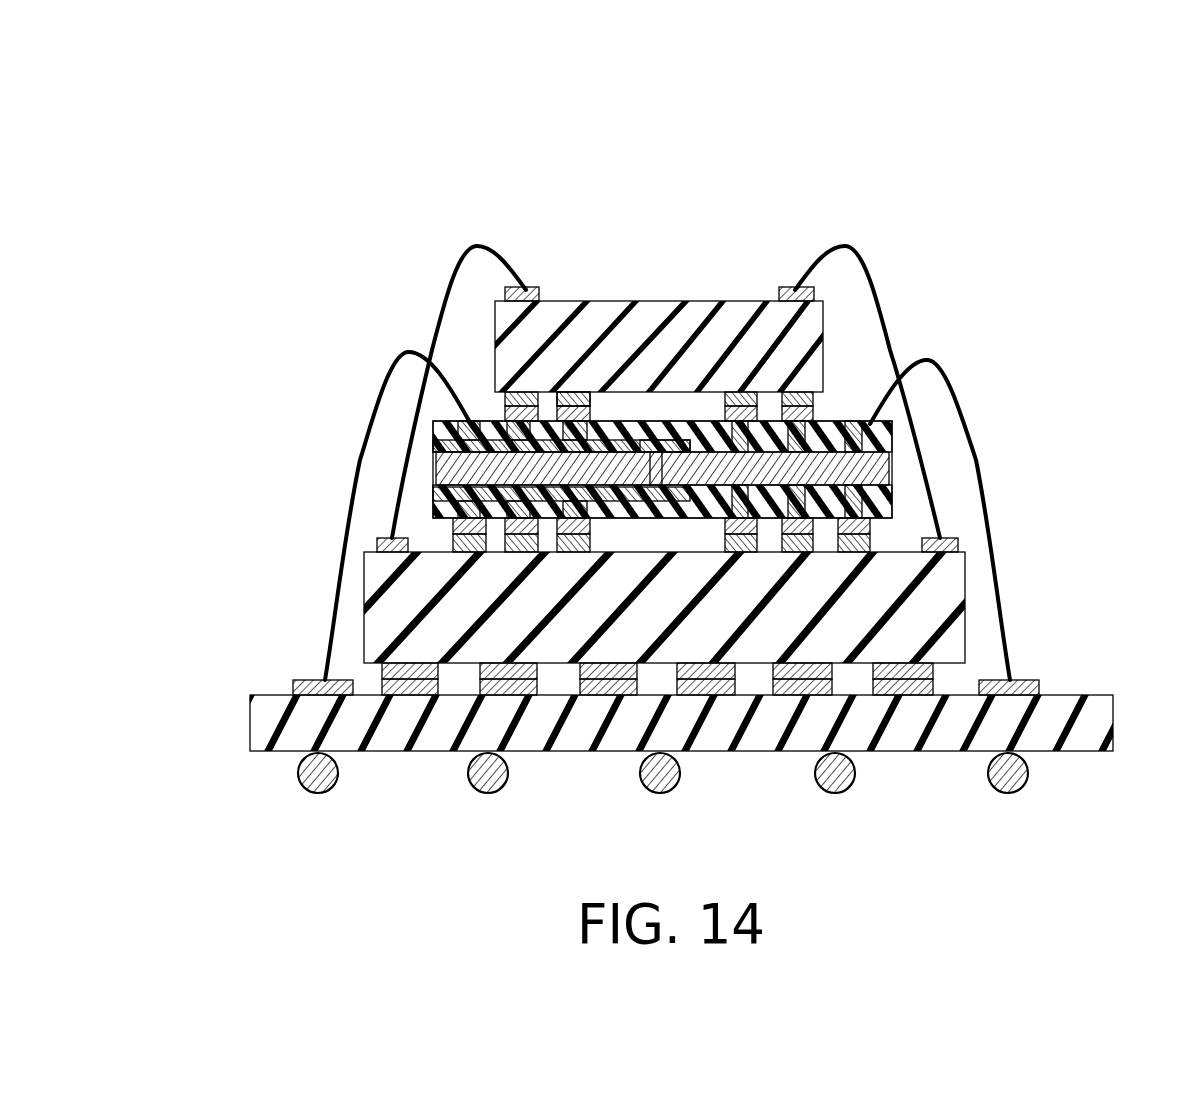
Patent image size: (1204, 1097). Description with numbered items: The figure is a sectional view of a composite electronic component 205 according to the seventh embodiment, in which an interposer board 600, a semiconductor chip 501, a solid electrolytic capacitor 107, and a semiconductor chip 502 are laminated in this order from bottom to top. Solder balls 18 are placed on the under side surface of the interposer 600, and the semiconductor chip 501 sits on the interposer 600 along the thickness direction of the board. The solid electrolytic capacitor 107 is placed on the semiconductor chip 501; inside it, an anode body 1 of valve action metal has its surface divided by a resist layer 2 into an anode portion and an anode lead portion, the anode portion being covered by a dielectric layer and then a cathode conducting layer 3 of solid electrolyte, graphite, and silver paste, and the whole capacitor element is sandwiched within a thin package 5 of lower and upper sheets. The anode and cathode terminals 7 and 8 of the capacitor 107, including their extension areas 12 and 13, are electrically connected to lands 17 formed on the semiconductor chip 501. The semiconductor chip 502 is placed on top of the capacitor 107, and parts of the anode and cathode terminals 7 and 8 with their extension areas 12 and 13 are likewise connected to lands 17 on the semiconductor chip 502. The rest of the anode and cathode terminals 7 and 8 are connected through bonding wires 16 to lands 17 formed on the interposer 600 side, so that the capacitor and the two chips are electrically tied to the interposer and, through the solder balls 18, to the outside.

The composite electronic component 205 is at (715, 183).
The semiconductor chip 502 is at (571, 288).
The semiconductor chip 501 is at (972, 605).
The solid electrolytic capacitor 107 is at (731, 367).
The interposer board 600 is at (1088, 695).
The bonding wire 16 is at (477, 240).
The land 17 is at (526, 286).
The cathode terminal 8 is at (500, 420).
The extension area 13 is at (507, 405).
The extension area 12 is at (864, 426).
The anode terminal 7 is at (872, 447).
The anode body 1 is at (636, 440).
The package 5 is at (652, 485).
The resist layer 2 is at (688, 445).
The cathode conducting layer 3 is at (598, 392).
The solder ball 18 is at (321, 793).